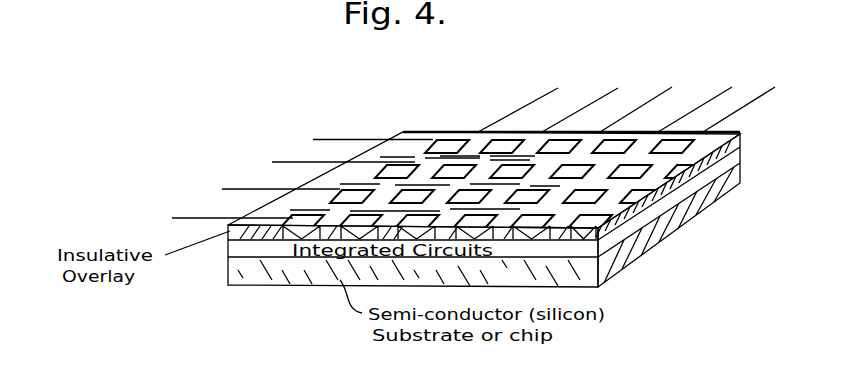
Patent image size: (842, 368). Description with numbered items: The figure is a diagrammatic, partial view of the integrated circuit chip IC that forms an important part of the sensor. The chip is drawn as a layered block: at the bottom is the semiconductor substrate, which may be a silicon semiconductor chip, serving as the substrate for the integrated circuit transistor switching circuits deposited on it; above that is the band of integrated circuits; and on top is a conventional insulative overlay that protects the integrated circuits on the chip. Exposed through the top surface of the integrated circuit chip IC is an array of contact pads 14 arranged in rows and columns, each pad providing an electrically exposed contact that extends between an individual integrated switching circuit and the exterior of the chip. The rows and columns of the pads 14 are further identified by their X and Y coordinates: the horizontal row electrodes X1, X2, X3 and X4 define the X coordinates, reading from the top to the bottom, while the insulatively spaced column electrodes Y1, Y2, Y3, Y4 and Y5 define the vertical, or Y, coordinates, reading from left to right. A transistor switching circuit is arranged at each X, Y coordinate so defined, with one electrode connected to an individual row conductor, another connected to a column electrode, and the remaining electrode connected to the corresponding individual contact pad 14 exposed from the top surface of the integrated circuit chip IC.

The contact pads 14 is at (345, 190).
The row electrode X1 is at (346, 211).
The row electrode X2 is at (391, 182).
The row electrode X3 is at (401, 154).
The row electrode X4 is at (424, 138).
The column electrode Y1 is at (524, 101).
The column electrode Y2 is at (586, 101).
The column electrode Y3 is at (644, 101).
The column electrode Y4 is at (700, 101).
The column electrode Y5 is at (746, 101).
The integrated circuit chip IC is at (650, 273).